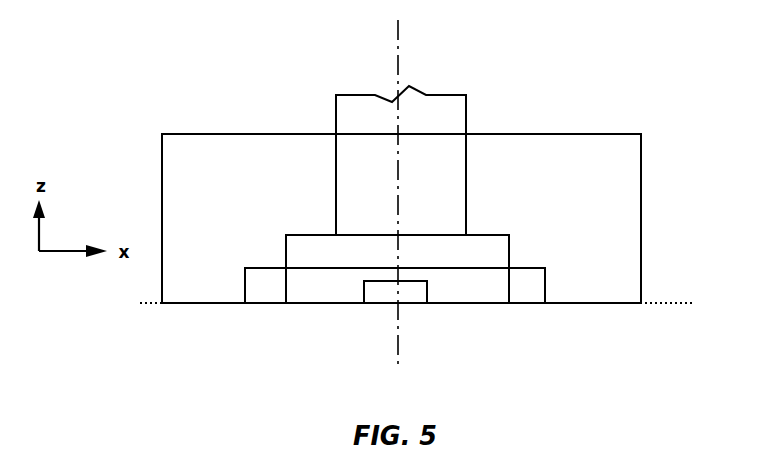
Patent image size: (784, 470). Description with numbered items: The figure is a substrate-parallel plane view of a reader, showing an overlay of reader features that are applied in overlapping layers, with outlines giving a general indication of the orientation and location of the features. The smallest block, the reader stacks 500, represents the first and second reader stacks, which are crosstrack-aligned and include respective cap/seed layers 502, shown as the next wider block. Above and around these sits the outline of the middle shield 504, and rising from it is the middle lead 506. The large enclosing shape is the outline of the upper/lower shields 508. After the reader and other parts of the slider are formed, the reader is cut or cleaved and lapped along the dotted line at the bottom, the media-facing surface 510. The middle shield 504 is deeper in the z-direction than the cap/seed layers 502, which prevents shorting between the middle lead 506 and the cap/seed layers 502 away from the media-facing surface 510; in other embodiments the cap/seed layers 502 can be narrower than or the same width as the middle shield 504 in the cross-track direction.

The reader stacks 500 is at (379, 290).
The cap/seed layers 502 is at (543, 278).
The middle shield 504 is at (504, 250).
The middle lead 506 is at (466, 197).
The upper/lower shields 508 is at (641, 175).
The media-facing surface 510 is at (670, 302).